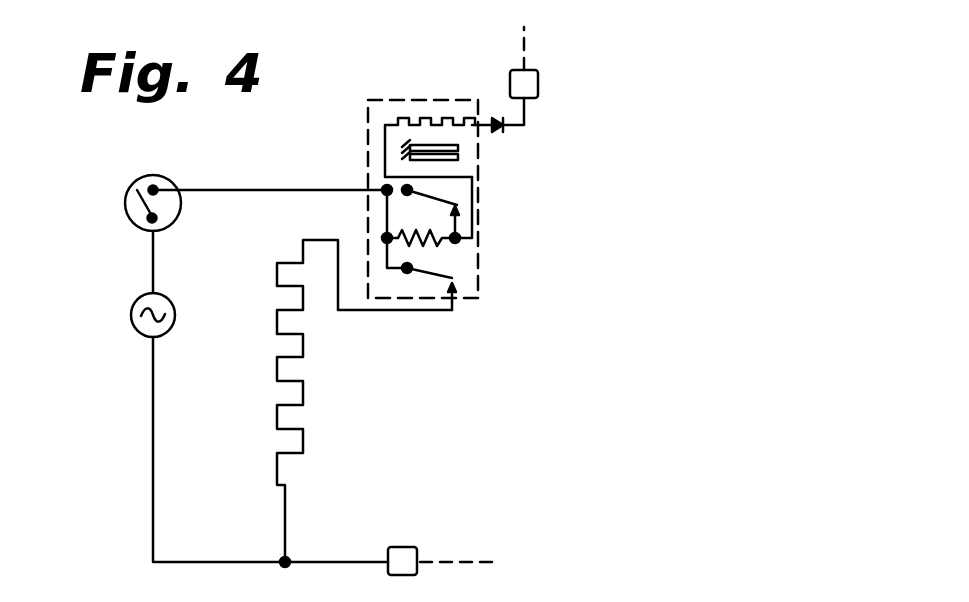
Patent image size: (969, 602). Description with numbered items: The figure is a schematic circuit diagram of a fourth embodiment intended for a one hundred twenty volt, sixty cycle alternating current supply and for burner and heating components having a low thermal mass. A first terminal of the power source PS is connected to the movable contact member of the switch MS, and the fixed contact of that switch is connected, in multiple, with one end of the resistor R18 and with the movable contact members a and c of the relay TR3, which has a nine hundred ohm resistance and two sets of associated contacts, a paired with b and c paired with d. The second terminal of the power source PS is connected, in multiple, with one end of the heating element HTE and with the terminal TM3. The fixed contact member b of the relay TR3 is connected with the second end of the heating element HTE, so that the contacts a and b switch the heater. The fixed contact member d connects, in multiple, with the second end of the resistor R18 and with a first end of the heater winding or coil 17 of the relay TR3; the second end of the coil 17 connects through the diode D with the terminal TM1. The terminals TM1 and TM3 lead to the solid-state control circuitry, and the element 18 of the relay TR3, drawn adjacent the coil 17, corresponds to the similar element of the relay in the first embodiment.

The switch MS is at (125, 203).
The power source PS is at (131, 313).
The heating element HTE is at (303, 392).
The terminal TM3 is at (400, 547).
The terminal TM1 is at (540, 83).
The diode D is at (501, 132).
The relay TR3 is at (400, 99).
The heater winding or coil 17 is at (433, 118).
The element 18 is at (458, 161).
The movable contact member c is at (438, 199).
The fixed contact member d is at (455, 223).
The resistor R18 is at (427, 245).
The movable contact member a is at (438, 273).
The fixed contact member b is at (457, 294).